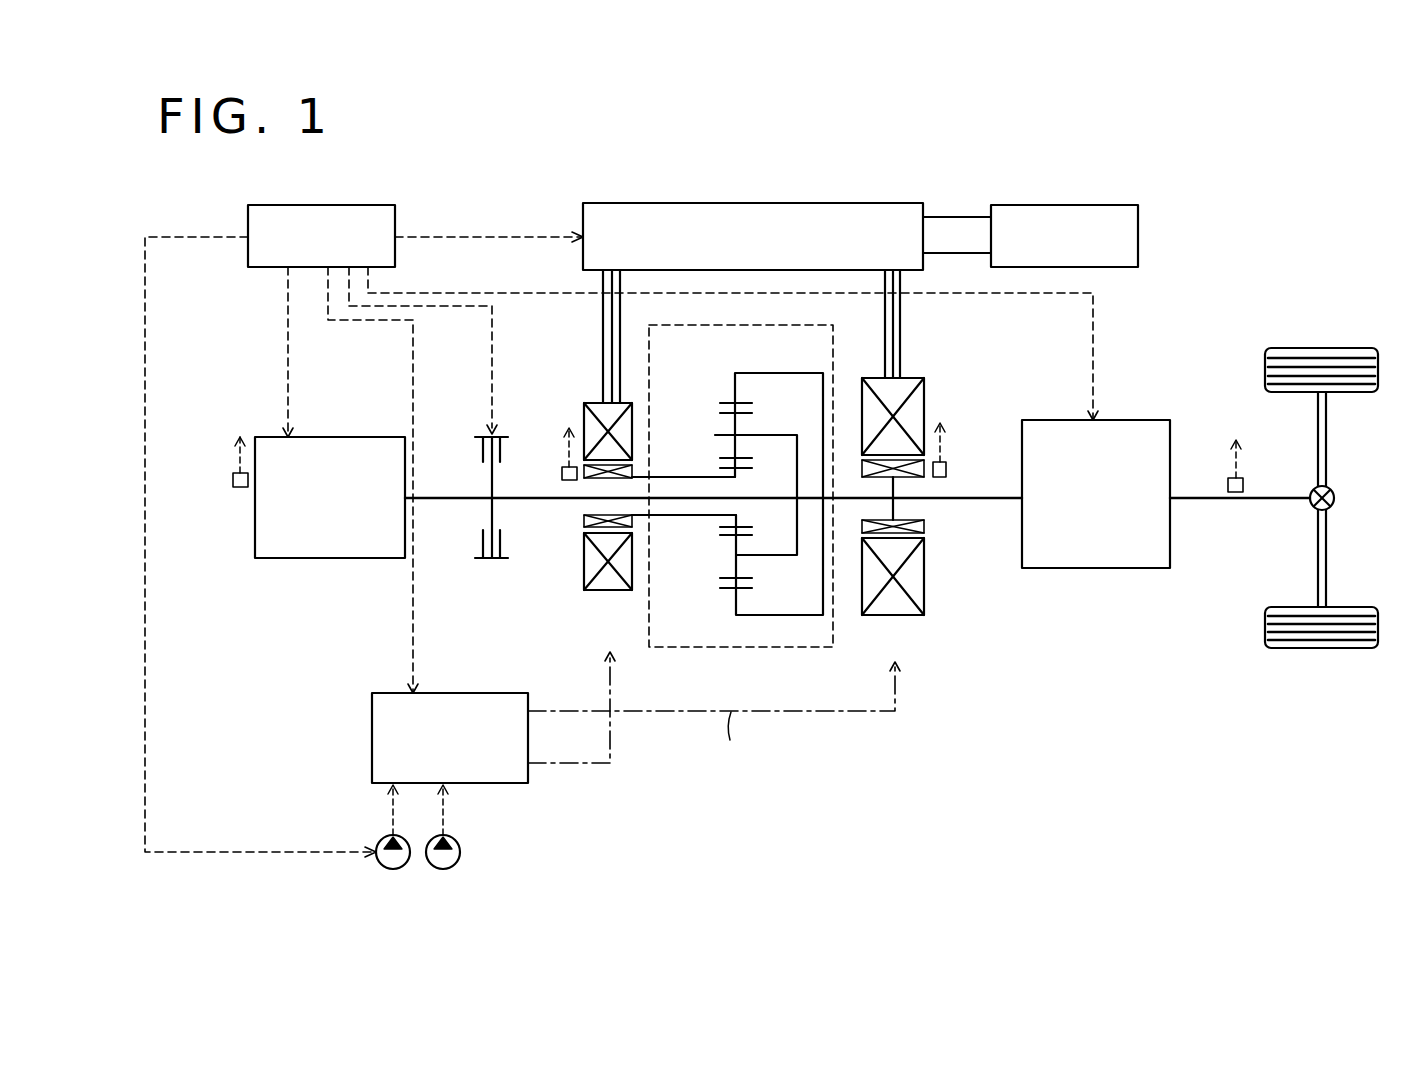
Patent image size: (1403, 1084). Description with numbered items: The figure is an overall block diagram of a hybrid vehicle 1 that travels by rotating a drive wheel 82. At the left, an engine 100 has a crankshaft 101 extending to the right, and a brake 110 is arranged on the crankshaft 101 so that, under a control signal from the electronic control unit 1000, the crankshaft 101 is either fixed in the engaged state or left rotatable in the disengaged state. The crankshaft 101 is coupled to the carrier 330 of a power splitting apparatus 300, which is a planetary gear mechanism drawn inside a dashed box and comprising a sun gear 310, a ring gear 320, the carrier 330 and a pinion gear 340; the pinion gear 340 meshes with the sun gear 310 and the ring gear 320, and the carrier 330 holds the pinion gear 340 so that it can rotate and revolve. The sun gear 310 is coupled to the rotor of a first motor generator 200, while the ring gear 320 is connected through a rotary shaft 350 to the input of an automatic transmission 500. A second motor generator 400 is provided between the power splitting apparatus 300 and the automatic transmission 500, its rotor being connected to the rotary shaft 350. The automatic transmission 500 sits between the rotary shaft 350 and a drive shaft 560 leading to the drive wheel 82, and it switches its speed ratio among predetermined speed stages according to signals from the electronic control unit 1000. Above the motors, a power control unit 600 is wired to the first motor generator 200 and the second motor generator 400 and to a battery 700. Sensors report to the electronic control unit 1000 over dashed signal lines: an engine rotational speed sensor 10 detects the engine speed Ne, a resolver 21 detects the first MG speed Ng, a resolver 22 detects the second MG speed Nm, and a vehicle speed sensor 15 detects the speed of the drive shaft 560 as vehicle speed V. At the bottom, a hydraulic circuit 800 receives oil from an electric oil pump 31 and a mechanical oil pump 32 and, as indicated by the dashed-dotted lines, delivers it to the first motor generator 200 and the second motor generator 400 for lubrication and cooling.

The vehicle 1 is at (700, 140).
The engine rotational speed sensor 10 is at (233, 480).
The vehicle speed sensor 15 is at (1243, 486).
The resolver 21 is at (562, 474).
The resolver 22 is at (947, 471).
The electric oil pump 31 is at (380, 840).
The mechanical oil pump 32 is at (457, 840).
The drive wheel 82 is at (1347, 348).
The engine 100 is at (330, 558).
The crankshaft 101 is at (437, 500).
The brake 110 is at (502, 541).
The first motor generator 200 is at (610, 592).
The power splitting apparatus 300 is at (741, 506).
The sun gear 310 is at (741, 469).
The ring gear 320 is at (724, 400).
The carrier 330 is at (788, 435).
The pinion gear 340 is at (722, 416).
The rotary shaft 350 is at (978, 500).
The second motor generator 400 is at (920, 614).
The automatic transmission 500 is at (1090, 568).
The drive shaft 560 is at (1265, 500).
The power control unit 600 is at (828, 203).
The battery 700 is at (1076, 205).
The hydraulic circuit 800 is at (462, 693).
The electronic control unit 1000 is at (348, 205).